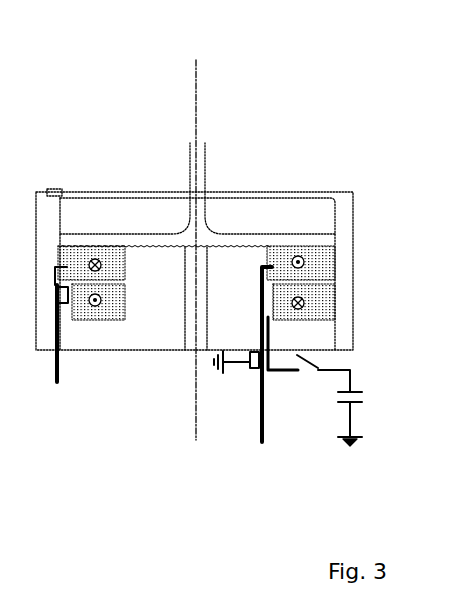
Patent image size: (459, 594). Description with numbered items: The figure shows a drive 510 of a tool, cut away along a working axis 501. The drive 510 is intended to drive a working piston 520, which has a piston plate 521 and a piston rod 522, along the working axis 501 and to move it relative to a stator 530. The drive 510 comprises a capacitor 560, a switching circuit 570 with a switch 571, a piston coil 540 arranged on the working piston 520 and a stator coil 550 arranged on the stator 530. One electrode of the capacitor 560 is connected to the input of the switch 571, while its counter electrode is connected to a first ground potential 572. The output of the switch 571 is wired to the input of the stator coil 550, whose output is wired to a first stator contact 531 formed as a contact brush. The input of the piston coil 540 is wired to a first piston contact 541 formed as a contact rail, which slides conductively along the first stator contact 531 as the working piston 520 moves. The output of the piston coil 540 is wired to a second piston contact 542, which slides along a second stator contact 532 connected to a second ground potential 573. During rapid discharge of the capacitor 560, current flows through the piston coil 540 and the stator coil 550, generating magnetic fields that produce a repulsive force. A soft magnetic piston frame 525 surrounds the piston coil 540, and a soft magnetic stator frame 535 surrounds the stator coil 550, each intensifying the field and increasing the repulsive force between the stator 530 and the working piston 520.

The drive 510 is at (66, 82).
The working piston 520 is at (118, 105).
The working axis 501 is at (166, 77).
The piston plate 521 is at (138, 240).
The piston rod 522 is at (192, 192).
The first piston contact 541 is at (46, 192).
The second piston contact 542 is at (258, 358).
The piston frame 525 is at (308, 247).
The piston coil 540 is at (318, 262).
The stator coil 550 is at (327, 300).
The capacitor 560 is at (362, 392).
The first stator contact 531 is at (45, 180).
The stator frame 535 is at (168, 330).
The stator 530 is at (130, 522).
The second ground potential 573 is at (219, 368).
The second stator contact 532 is at (255, 370).
The switch 571 is at (315, 367).
The first ground potential 572 is at (347, 445).
The switching circuit 570 is at (272, 510).